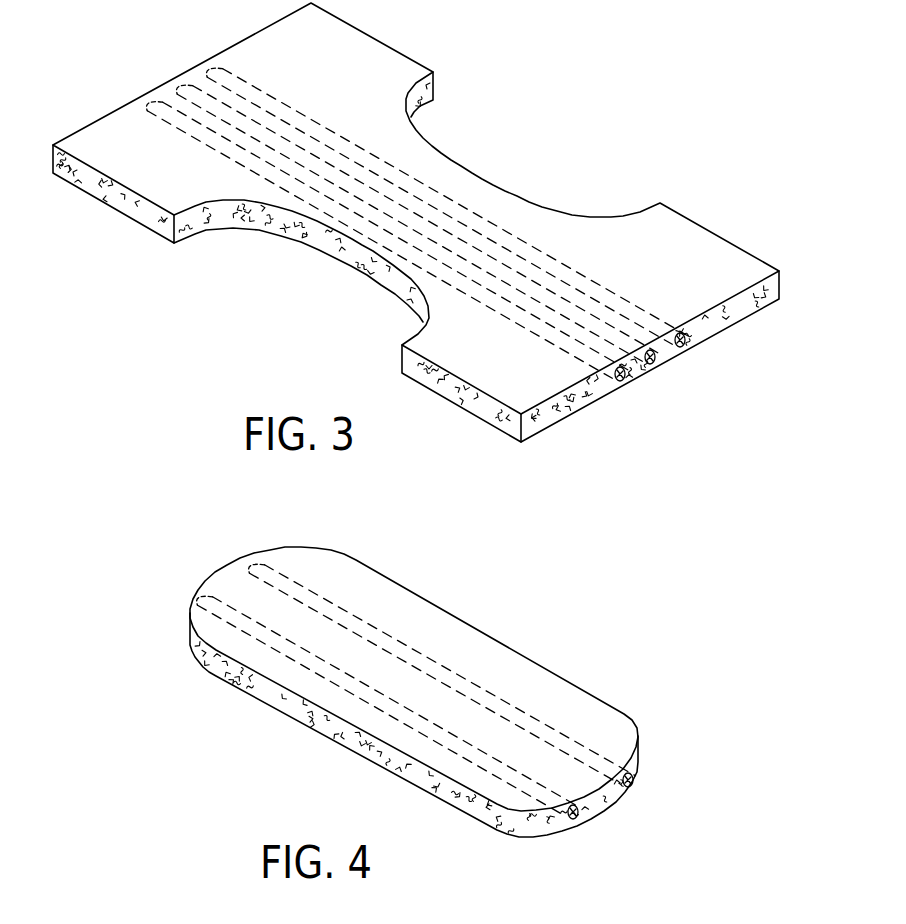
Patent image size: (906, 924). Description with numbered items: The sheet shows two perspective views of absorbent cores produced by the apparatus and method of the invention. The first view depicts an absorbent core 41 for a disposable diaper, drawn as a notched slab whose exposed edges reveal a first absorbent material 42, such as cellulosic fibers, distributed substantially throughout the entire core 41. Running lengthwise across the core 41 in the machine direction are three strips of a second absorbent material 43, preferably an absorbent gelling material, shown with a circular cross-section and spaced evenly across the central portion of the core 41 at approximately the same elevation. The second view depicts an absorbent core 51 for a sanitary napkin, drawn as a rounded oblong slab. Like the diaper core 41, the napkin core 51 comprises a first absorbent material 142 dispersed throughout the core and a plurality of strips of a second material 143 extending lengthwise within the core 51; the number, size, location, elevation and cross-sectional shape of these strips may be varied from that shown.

In FIG. 3, the absorbent core 41 is at (530, 108).
In FIG. 3, the first absorbent material 42 is at (720, 322).
In FIG. 3, the second absorbent material 43 is at (620, 377).
In FIG. 4, the absorbent core 51 is at (505, 630).
In FIG. 4, the first absorbent material 142 is at (507, 818).
In FIG. 4, the second material 143 is at (632, 788).